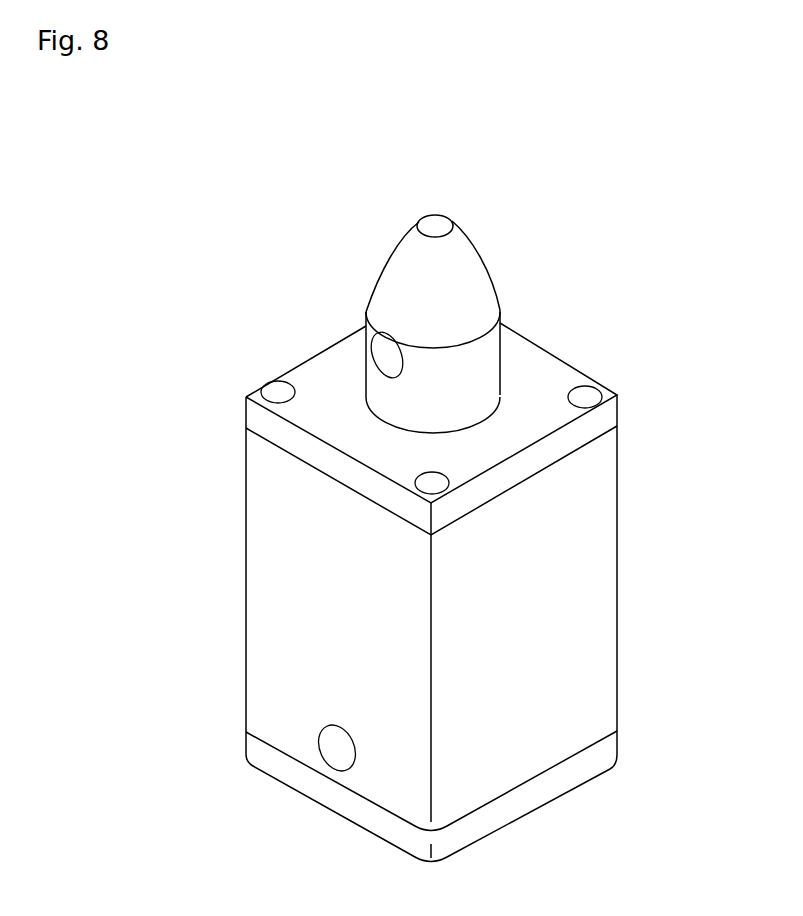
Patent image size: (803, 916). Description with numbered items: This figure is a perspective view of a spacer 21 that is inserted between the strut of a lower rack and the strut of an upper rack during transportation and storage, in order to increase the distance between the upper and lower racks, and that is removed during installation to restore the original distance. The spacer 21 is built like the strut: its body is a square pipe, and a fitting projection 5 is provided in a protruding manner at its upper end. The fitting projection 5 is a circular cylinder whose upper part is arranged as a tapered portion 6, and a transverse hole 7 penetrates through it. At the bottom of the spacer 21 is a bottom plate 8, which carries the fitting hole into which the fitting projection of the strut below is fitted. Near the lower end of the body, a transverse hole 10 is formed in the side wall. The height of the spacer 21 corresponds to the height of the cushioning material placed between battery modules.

The fitting projection 5 is at (487, 347).
The tapered portion 6 is at (462, 263).
The transverse hole 7 is at (378, 353).
The bottom plate 8 is at (535, 795).
The transverse hole 10 is at (346, 754).
The spacer 21 is at (587, 570).